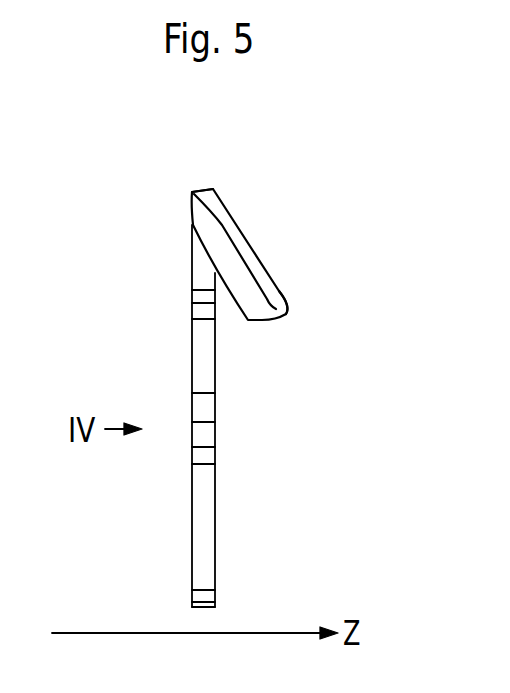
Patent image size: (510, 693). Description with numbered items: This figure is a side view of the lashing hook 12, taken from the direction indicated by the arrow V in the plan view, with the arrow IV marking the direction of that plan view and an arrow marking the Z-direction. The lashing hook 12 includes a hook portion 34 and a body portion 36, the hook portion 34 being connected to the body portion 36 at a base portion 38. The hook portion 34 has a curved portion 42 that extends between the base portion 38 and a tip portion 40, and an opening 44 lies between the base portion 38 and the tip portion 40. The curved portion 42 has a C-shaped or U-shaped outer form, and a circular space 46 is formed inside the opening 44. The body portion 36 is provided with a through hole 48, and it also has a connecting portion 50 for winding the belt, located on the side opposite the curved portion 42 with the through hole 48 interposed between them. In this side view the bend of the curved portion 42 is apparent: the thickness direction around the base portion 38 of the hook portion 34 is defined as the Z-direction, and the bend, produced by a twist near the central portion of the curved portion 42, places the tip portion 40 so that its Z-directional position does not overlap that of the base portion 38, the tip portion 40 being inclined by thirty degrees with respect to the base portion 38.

The lashing hook 12 is at (389, 273).
The hook portion 34 is at (332, 180).
The body portion 36 is at (332, 396).
The base portion 38 is at (192, 377).
The tip portion 40 is at (291, 312).
The curved portion 42 is at (211, 198).
The opening 44 is at (227, 323).
The circular space 46 is at (223, 300).
The through hole 48 is at (192, 488).
The connecting portion 50 is at (192, 574).